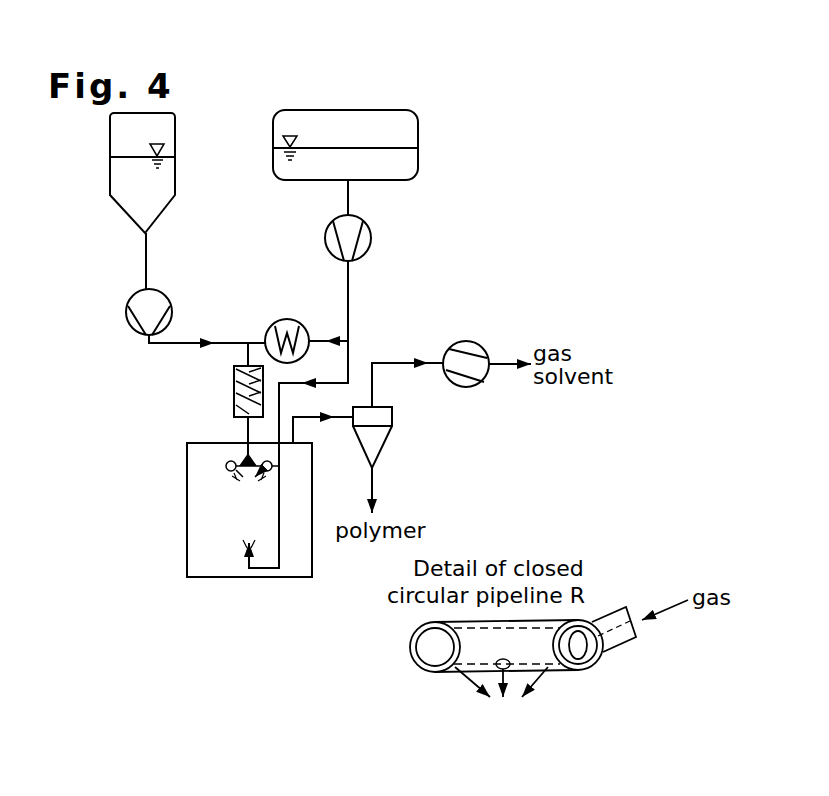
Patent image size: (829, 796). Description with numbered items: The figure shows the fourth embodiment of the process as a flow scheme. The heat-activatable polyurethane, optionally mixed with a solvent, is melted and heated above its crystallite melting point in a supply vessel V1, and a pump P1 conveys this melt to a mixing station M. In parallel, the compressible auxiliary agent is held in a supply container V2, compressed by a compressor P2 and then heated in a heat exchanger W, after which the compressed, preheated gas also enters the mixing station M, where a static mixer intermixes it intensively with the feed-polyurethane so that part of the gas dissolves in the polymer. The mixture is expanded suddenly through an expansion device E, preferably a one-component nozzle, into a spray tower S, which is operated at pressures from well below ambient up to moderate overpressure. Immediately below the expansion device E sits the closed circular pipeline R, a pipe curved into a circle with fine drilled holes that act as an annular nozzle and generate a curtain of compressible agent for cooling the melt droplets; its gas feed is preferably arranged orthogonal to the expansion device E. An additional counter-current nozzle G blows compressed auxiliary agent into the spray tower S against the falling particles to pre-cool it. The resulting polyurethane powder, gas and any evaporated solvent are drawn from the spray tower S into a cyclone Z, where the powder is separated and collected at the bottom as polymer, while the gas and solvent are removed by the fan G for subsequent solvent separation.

The supply vessel V1 is at (125, 173).
The supply container V2 is at (363, 145).
The pump P1 is at (130, 312).
The compressor P2 is at (330, 238).
The heat exchanger W is at (287, 327).
The mixing station M is at (236, 391).
The spray tower S is at (238, 510).
The expansion device E is at (239, 465).
The circular pipeline R is at (250, 490).
The fan / counter-current nozzle G is at (351, 445).
The cyclone Z is at (382, 460).